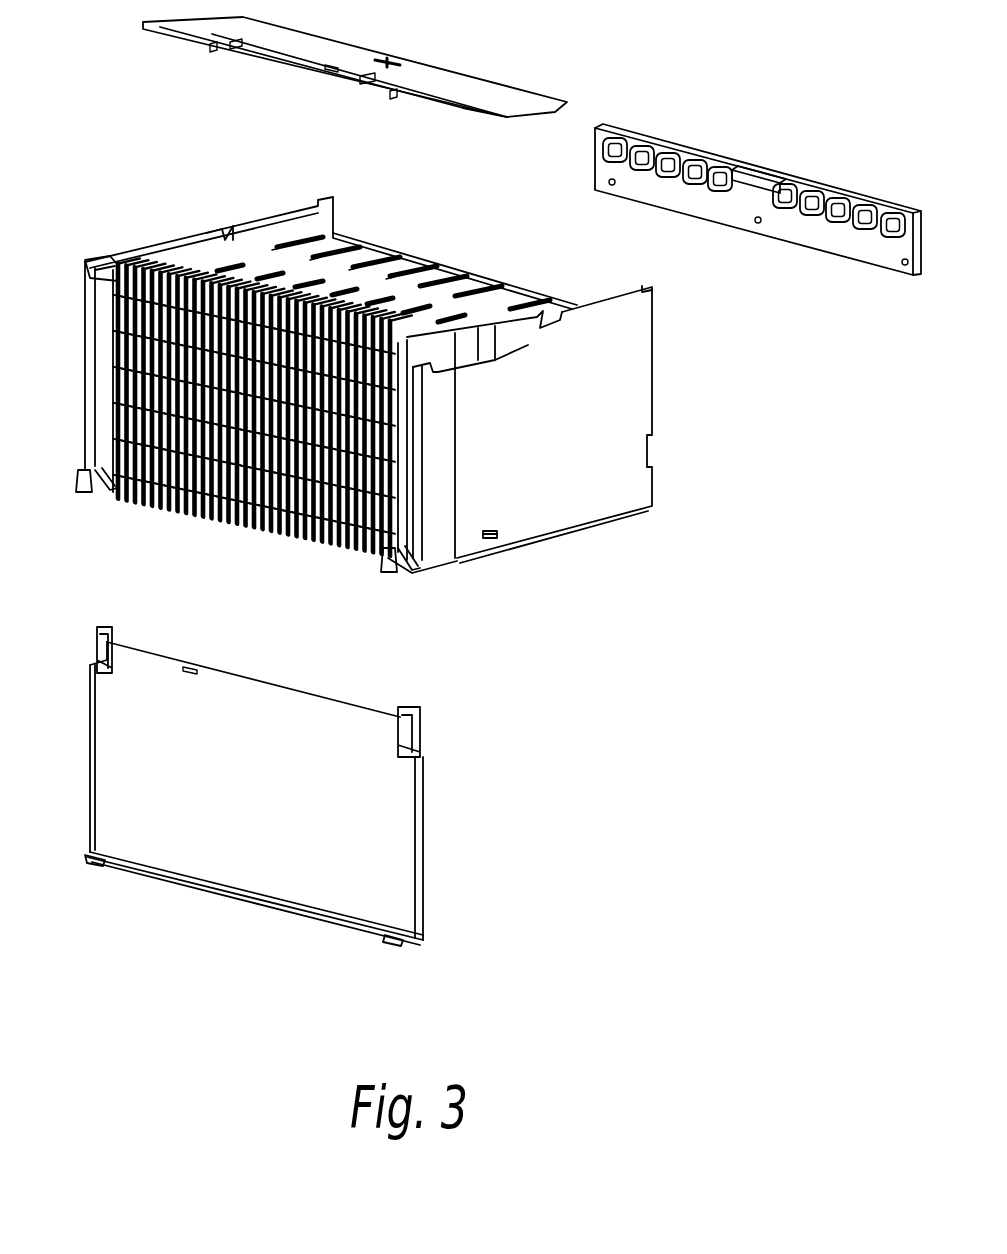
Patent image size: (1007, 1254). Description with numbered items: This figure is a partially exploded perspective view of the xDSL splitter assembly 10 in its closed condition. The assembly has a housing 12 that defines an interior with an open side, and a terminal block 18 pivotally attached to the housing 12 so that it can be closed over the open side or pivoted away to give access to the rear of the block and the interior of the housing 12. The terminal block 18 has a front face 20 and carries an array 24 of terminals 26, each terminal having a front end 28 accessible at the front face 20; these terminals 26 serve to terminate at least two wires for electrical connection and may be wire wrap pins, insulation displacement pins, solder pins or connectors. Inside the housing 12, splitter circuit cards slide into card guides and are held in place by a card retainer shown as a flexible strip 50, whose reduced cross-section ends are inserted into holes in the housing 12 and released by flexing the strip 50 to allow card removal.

The xDSL splitter assembly 10 is at (503, 712).
The housing 12 is at (585, 498).
The terminal block 18 is at (430, 543).
The front face 20 is at (290, 537).
The array 24 is at (70, 268).
The terminals 26 is at (150, 497).
The front ends 28 is at (203, 513).
The flexible strip 50 is at (492, 527).